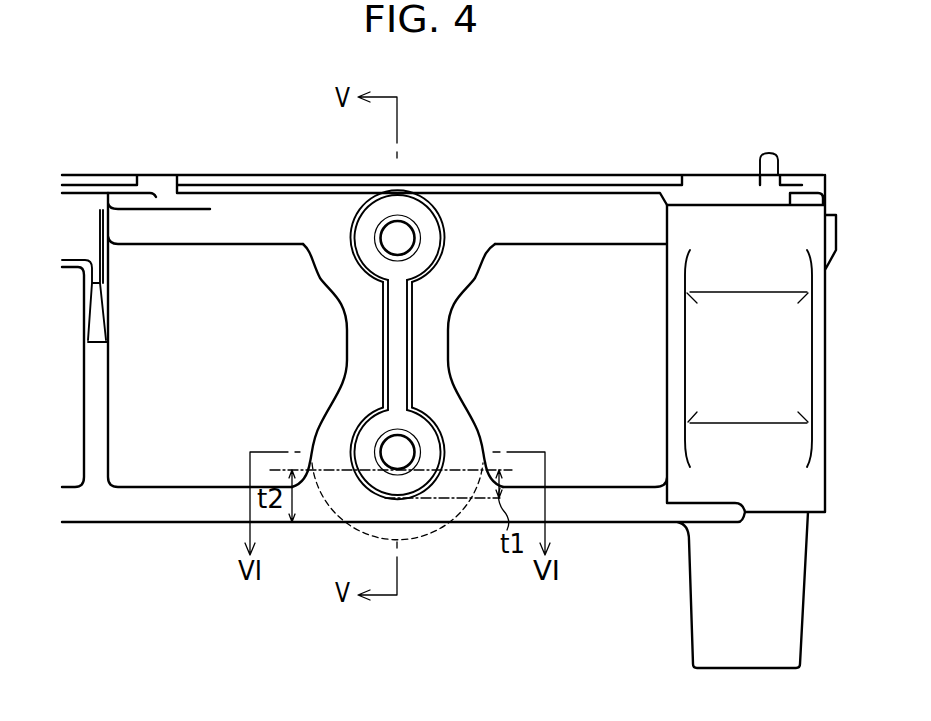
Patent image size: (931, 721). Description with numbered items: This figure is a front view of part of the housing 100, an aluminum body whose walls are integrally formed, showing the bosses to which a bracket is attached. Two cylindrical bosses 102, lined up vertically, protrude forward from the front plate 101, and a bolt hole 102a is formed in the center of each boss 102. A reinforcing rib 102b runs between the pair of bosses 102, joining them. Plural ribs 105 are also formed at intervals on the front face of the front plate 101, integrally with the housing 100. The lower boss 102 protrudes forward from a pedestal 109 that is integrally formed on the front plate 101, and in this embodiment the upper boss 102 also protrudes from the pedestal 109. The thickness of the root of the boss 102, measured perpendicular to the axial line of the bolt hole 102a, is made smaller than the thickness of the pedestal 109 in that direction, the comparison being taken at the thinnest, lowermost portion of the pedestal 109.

The housing 100 is at (621, 220).
The front plate 101 is at (224, 272).
The boss 102 is at (420, 215).
The bolt hole 102a is at (393, 236).
The reinforcing rib 102b is at (397, 333).
The rib 105 is at (98, 376).
The pedestal 109 is at (453, 413).